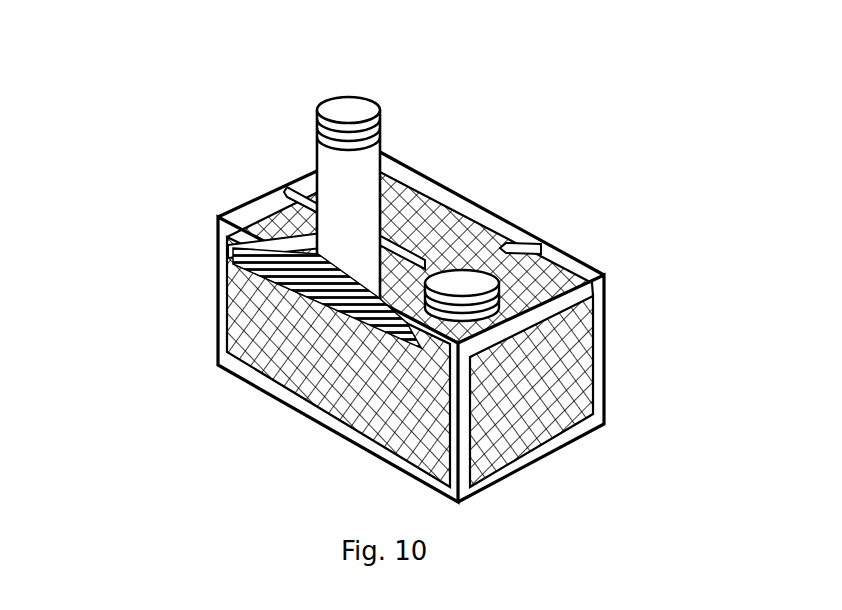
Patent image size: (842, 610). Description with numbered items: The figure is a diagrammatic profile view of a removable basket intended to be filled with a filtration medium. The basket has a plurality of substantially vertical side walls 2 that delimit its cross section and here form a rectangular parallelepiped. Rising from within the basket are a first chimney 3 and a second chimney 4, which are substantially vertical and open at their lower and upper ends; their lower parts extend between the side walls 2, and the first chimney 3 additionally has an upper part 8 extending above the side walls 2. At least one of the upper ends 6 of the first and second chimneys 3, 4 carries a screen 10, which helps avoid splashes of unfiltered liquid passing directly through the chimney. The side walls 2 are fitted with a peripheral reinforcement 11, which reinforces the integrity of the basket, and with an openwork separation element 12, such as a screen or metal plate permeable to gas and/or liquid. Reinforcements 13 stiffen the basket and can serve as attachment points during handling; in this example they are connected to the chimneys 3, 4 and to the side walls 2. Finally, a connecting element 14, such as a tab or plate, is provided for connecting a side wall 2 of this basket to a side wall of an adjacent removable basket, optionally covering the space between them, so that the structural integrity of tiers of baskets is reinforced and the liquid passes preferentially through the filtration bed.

The side wall 2 is at (240, 357).
The first chimney 3 is at (265, 164).
The second chimney 4 is at (454, 262).
The upper end 6 is at (347, 108).
The upper part 8 is at (332, 174).
The screen 10 is at (384, 116).
The peripheral reinforcement 11 is at (215, 238).
The openwork separation element 12 is at (243, 299).
The reinforcement 13 is at (506, 245).
The connecting element 14 is at (412, 346).